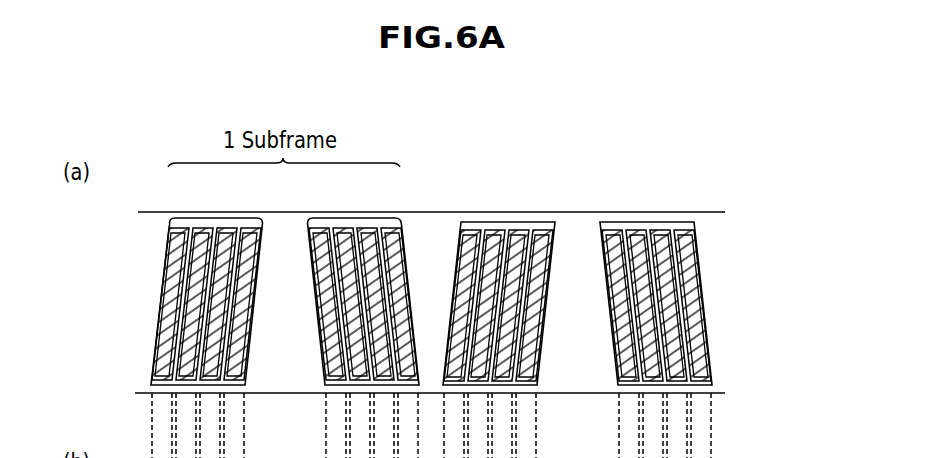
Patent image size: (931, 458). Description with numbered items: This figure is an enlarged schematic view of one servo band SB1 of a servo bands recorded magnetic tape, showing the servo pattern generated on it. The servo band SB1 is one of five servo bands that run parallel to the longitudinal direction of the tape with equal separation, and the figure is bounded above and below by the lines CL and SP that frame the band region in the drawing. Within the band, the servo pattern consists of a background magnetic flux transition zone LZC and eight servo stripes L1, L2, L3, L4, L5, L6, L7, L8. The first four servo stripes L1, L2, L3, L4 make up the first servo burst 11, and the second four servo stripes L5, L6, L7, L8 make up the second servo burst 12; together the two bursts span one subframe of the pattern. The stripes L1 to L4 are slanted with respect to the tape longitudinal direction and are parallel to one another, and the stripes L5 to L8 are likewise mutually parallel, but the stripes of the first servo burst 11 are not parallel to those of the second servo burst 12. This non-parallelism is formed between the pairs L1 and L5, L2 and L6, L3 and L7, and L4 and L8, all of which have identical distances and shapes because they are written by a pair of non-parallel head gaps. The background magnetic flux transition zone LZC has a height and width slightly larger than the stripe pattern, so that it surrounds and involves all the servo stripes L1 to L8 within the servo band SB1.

The first servo burst 11 is at (220, 212).
The second servo burst 12 is at (360, 212).
The background magnetic flux transition zone LZC is at (170, 238).
The servo stripe L1 is at (178, 284).
The servo stripe L2 is at (196, 312).
The servo stripe L3 is at (215, 344).
The servo stripe L4 is at (235, 376).
The servo stripe L5 is at (338, 288).
The servo stripe L6 is at (356, 318).
The servo stripe L7 is at (376, 357).
The servo stripe L8 is at (402, 316).
The center line CL is at (433, 222).
The scan pulse timing line SP is at (280, 385).
The servo band SB1 is at (712, 235).